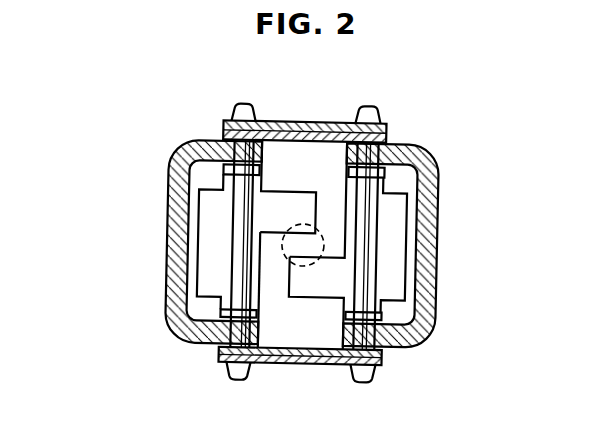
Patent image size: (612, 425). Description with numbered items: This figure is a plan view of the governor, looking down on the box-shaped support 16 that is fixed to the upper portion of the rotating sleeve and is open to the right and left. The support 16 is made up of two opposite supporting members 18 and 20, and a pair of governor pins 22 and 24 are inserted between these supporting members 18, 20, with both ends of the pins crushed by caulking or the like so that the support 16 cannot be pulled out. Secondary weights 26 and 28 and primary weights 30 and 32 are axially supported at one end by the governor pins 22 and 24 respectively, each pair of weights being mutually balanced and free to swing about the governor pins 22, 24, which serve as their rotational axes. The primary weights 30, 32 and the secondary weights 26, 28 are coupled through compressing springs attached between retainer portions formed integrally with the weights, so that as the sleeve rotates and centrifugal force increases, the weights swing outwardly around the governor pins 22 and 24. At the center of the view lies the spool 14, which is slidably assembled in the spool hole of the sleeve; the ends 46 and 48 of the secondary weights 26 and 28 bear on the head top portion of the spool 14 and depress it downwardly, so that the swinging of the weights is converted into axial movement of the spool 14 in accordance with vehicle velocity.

The spool 14 is at (282, 250).
The support 16 is at (222, 121).
The supporting member 18 is at (308, 121).
The supporting member 20 is at (302, 364).
The governor pin 22 is at (235, 278).
The governor pin 24 is at (370, 282).
The secondary weight 26 is at (210, 205).
The secondary weight 28 is at (398, 213).
The primary weight 30 is at (172, 244).
The primary weight 32 is at (428, 242).
The end of secondary weight 46 is at (284, 200).
The end of secondary weight 48 is at (322, 286).